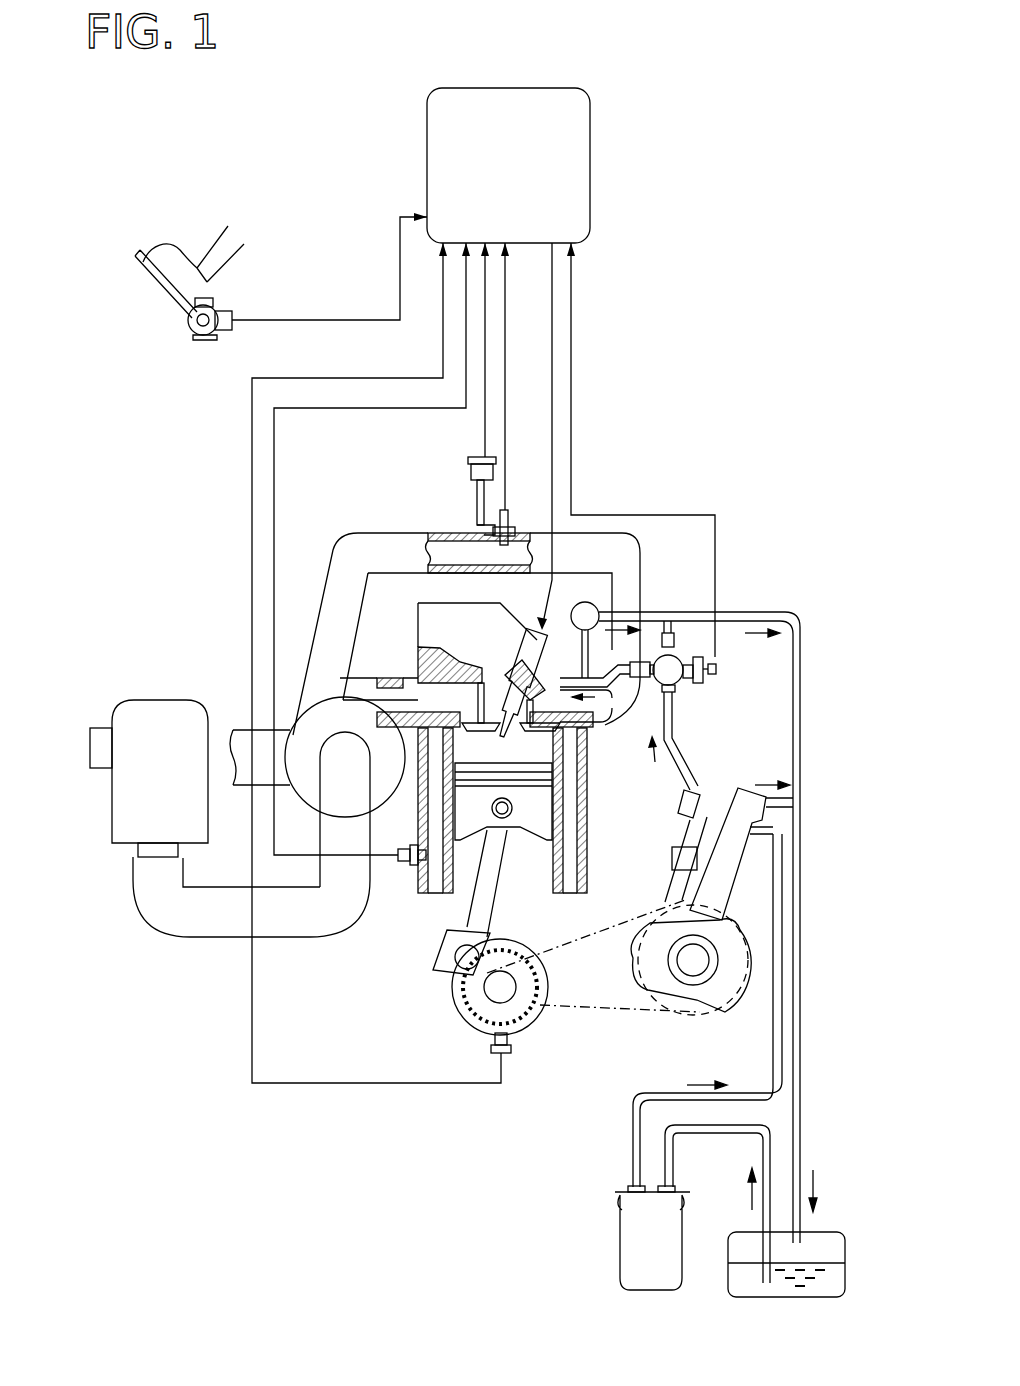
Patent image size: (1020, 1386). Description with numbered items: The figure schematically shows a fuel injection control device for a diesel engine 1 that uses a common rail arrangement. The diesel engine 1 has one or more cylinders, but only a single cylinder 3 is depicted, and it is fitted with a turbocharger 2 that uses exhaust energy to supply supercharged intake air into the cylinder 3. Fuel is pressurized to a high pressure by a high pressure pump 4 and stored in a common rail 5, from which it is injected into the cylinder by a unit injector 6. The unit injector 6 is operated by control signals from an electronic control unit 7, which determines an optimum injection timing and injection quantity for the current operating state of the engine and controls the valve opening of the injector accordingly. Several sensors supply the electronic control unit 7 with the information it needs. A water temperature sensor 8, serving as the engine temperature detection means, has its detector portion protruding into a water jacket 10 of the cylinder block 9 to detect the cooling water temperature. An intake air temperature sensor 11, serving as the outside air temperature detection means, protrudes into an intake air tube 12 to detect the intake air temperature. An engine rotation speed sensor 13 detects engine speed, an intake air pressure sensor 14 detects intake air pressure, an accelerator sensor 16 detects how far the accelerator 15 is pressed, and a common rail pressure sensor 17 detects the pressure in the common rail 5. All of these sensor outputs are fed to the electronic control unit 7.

The diesel engine 1 is at (385, 625).
The turbocharger 2 is at (283, 703).
The cylinder 3 is at (533, 752).
The high pressure pump 4 is at (655, 873).
The common rail 5 is at (677, 690).
The unit injector 6 is at (533, 640).
The electronic control unit 7 is at (517, 174).
The water temperature sensor 8 is at (402, 866).
The cylinder block 9 is at (423, 820).
The water jacket 10 is at (436, 883).
The intake air temperature sensor 11 is at (508, 515).
The intake air tube 12 is at (441, 533).
The engine rotation speed sensor 13 is at (511, 1040).
The intake air pressure sensor 14 is at (468, 470).
The accelerator 15 is at (143, 272).
The accelerator sensor 16 is at (220, 312).
The common rail pressure sensor 17 is at (705, 683).